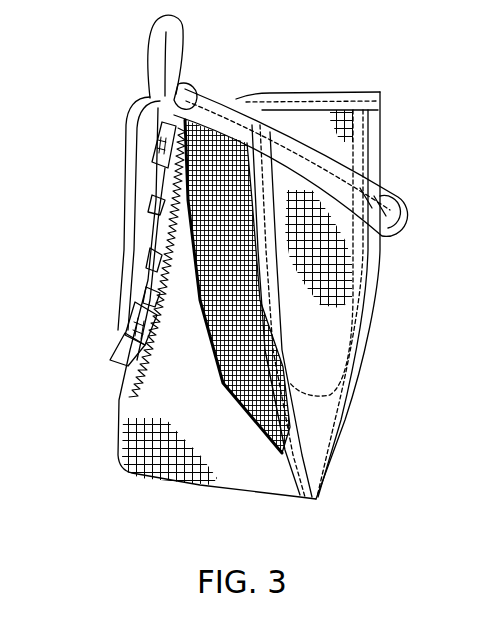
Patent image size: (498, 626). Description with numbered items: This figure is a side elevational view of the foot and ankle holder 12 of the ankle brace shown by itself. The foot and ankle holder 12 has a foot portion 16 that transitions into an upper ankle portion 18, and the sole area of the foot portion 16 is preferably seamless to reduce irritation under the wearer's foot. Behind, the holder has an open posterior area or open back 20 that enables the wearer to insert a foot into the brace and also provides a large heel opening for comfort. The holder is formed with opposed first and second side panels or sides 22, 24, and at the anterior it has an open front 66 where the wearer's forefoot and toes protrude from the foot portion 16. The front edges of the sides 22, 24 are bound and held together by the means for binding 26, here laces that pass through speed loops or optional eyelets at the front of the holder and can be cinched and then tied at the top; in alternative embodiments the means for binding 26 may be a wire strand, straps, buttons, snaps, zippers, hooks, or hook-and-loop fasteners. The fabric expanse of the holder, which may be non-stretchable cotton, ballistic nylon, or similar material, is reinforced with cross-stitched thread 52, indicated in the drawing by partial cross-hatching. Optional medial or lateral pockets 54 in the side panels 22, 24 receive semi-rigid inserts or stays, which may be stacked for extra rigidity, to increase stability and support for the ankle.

The foot and ankle holder 12 is at (420, 70).
The foot portion 16 is at (120, 430).
The upper ankle portion 18 is at (383, 160).
The open back 20 is at (327, 320).
The first side panel 22 is at (222, 137).
The second side panel 24 is at (299, 127).
The means for binding 26 is at (150, 49).
The cross-stitched thread 52 is at (333, 250).
The pocket 54 is at (358, 125).
The open front 66 is at (117, 403).